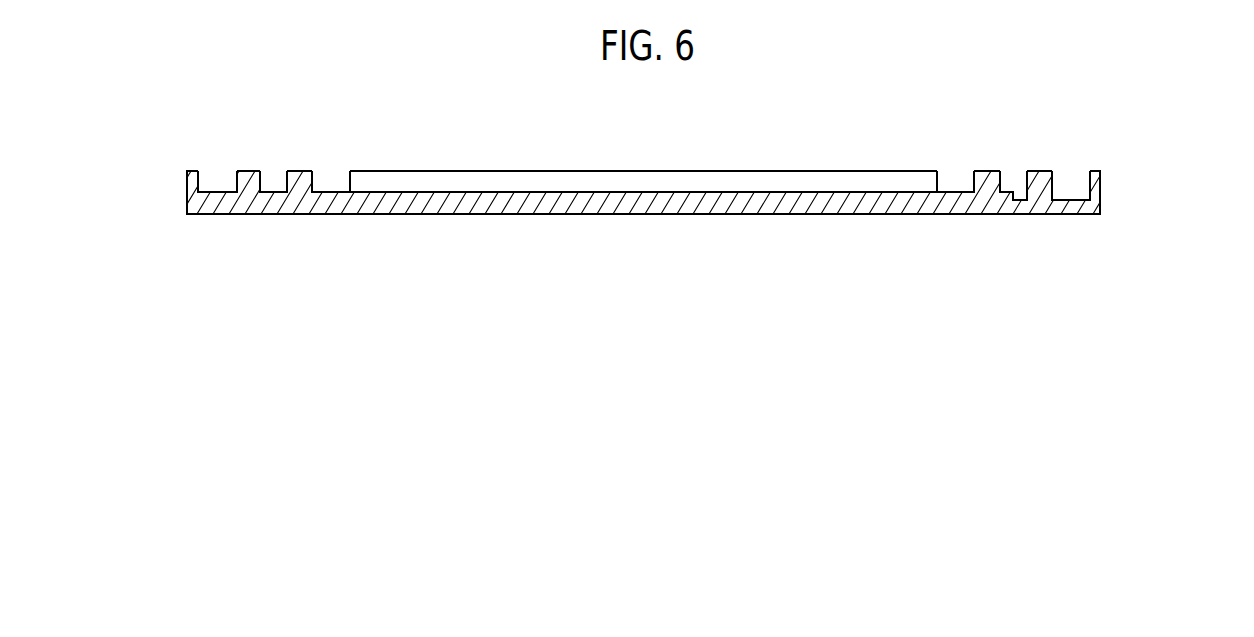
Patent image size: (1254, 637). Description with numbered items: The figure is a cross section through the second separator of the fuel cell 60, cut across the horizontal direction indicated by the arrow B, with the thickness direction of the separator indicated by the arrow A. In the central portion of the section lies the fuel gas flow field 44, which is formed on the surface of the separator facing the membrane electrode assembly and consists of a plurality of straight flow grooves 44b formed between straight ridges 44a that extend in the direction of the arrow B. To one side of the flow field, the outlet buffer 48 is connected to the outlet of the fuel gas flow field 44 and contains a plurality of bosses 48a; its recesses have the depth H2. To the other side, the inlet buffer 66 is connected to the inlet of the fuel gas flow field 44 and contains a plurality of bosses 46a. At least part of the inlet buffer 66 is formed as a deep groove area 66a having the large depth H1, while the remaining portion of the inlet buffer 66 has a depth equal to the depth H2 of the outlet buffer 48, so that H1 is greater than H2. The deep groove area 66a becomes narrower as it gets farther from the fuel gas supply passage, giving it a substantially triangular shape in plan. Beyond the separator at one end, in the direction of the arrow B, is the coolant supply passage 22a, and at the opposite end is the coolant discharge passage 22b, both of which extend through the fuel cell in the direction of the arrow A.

The fuel cell 60 is at (925, 83).
The outlet buffer 48 is at (218, 157).
The bosses 48a is at (247, 172).
The coolant supply passage 22a is at (162, 180).
The fuel gas flow field 44 is at (819, 147).
The straight ridges 44a is at (715, 170).
The straight flow grooves 44b is at (767, 191).
The deep groove area 66a is at (1020, 188).
The bosses 46a is at (1040, 172).
The inlet buffer 66 is at (1059, 148).
The coolant discharge passage 22b is at (1130, 193).
The depth of outlet buffer H2 is at (953, 230).
The depth of deep groove area H1 is at (1071, 143).
The stacking direction arrow A is at (1198, 155).
The horizontal direction arrow B is at (683, 260).